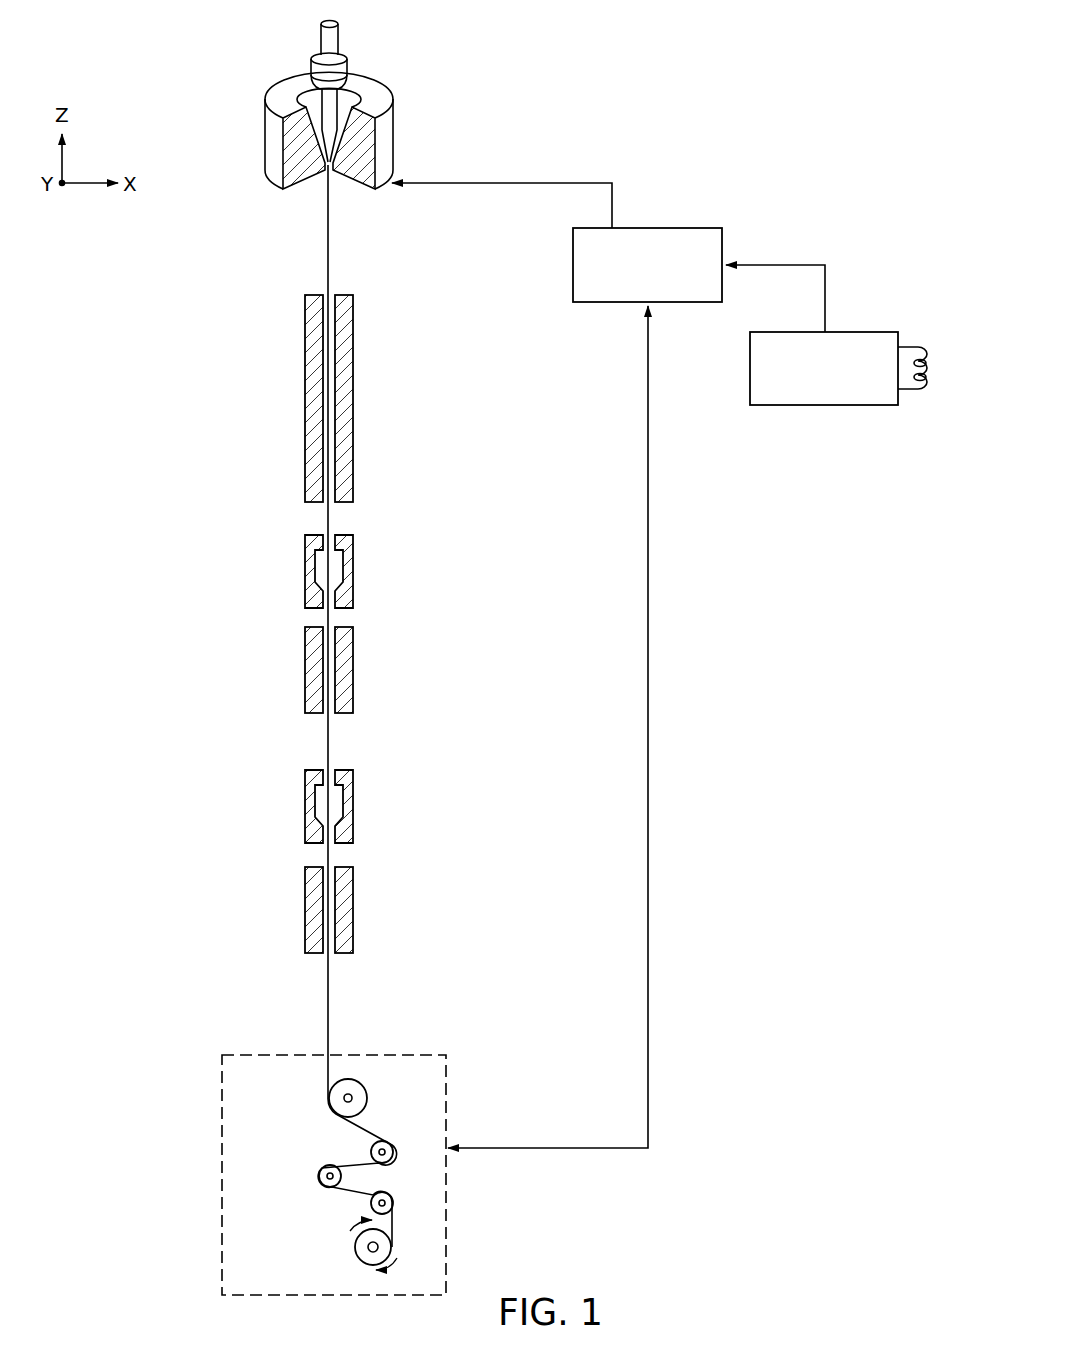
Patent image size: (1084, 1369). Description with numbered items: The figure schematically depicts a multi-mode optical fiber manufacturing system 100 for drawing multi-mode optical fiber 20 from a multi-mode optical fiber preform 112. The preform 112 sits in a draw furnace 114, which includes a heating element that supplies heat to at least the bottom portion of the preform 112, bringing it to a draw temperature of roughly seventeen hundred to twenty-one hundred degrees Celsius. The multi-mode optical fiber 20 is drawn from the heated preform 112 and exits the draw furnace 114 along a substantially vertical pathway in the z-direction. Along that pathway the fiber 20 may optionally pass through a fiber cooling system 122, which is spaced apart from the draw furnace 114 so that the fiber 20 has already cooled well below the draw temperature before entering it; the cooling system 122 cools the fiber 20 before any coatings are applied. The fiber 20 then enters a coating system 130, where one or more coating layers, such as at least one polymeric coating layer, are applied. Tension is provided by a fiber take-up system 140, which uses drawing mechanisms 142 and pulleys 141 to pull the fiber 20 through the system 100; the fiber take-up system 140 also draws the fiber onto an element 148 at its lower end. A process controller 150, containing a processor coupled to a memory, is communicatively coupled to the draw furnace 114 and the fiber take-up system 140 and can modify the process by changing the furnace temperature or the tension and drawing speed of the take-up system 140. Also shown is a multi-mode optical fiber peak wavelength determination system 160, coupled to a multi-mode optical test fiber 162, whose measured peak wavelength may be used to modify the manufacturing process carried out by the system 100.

The multi-mode optical fiber manufacturing system 100 is at (555, 130).
The multi-mode optical fiber preform 112 is at (362, 50).
The draw furnace 114 is at (408, 120).
The multi-mode optical fiber 20 is at (318, 182).
The fiber cooling system 122 is at (377, 387).
The coating system 130 is at (270, 520).
The fiber take-up system 140 is at (447, 1069).
The pulleys 141 is at (371, 1152).
The drawing mechanisms 142 is at (329, 1098).
The spool / winder 148 is at (355, 1250).
The process controller 150 is at (700, 227).
The multi-mode optical fiber peak wavelength determination system 160 is at (862, 331).
The multi-mode optical test fiber 162 is at (925, 347).